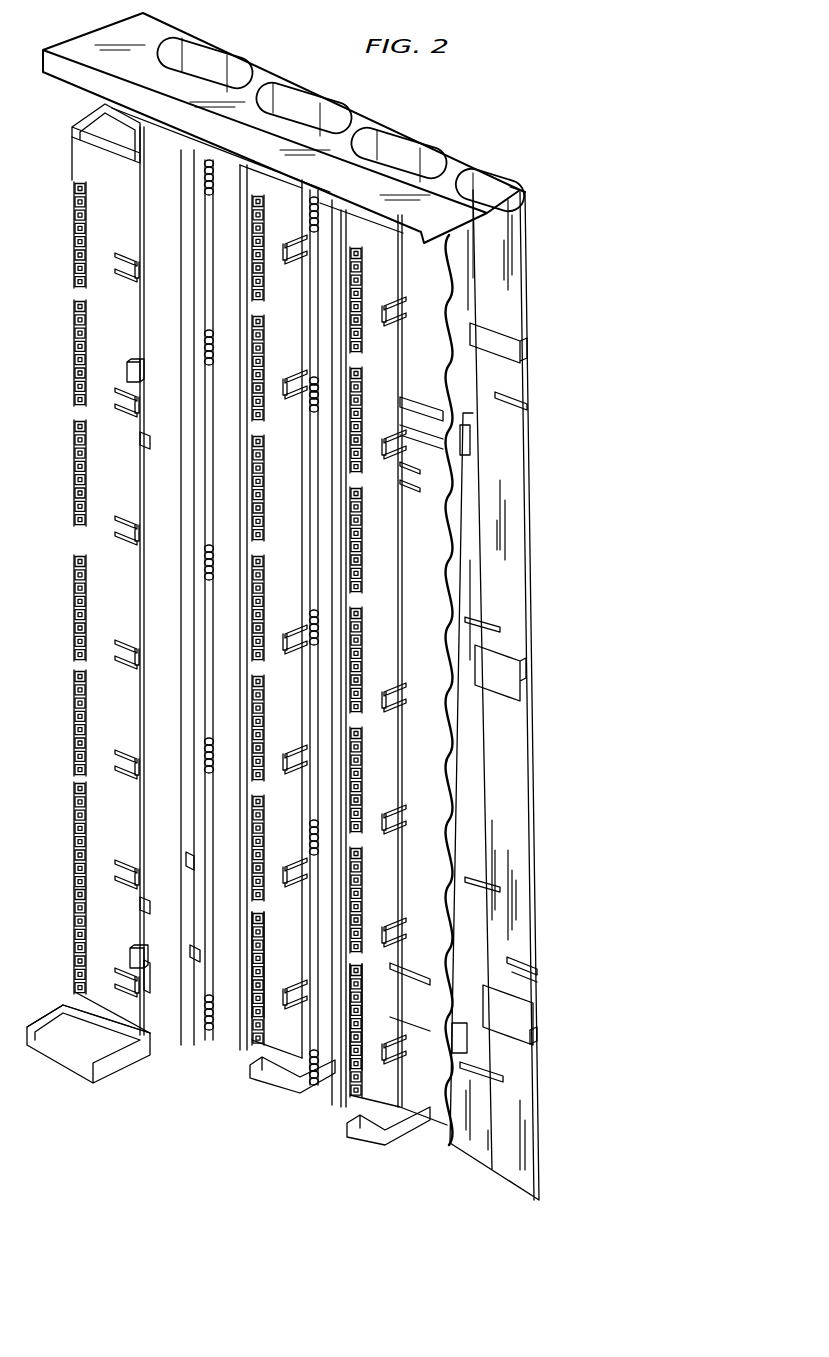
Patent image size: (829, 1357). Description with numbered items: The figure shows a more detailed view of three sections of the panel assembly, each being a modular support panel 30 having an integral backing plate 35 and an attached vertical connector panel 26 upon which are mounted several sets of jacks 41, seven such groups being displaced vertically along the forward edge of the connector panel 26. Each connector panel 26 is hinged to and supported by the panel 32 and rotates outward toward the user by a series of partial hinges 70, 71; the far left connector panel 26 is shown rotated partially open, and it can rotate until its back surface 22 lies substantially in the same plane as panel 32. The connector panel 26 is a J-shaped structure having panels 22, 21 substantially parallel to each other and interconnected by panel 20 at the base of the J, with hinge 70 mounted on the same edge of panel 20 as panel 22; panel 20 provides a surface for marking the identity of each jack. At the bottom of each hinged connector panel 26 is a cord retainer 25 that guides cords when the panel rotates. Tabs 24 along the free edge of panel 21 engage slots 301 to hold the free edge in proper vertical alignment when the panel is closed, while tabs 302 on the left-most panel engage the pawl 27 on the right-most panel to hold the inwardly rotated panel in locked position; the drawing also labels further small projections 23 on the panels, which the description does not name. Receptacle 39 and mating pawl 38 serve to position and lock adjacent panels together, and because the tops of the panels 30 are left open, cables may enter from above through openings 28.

The panel 20 is at (82, 112).
The panel 21 is at (70, 157).
The back surface 22 is at (142, 146).
The retaining prongs 23 is at (139, 254).
The tabs 24 is at (142, 368).
The cord retainer 25 is at (131, 1047).
The connector panel 26 is at (99, 1000).
The pawl 27 is at (414, 491).
The openings 28 is at (401, 139).
The modular support panel 30 is at (174, 24).
The panel 32 is at (151, 967).
The backing plate 35 is at (458, 1143).
The pawl 38 is at (538, 975).
The receptacle 39 is at (538, 1036).
The jacks 41 is at (76, 183).
The partial hinge 70 is at (312, 371).
The partial hinge 71 is at (318, 386).
The slots 301 is at (430, 420).
The tabs 302 is at (148, 436).